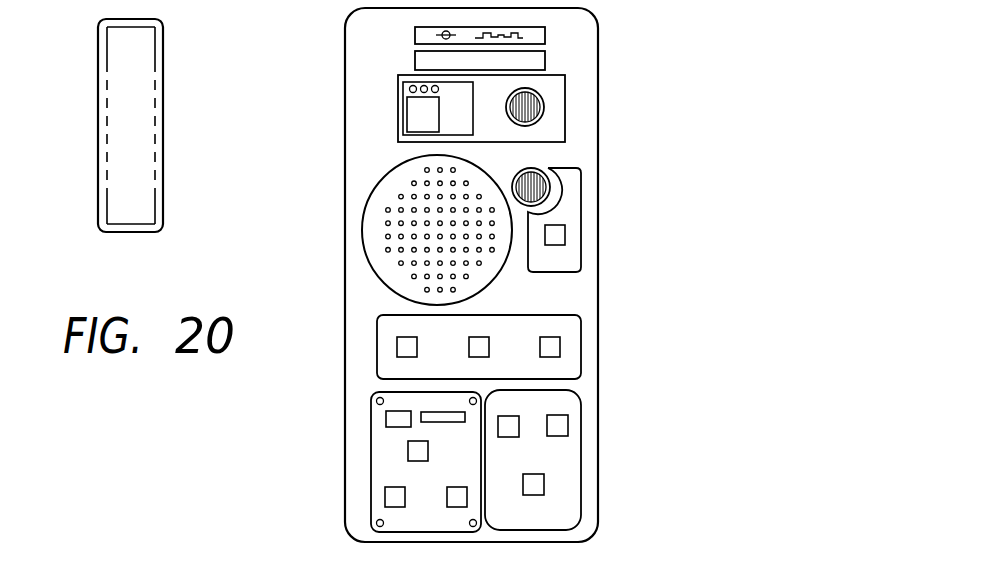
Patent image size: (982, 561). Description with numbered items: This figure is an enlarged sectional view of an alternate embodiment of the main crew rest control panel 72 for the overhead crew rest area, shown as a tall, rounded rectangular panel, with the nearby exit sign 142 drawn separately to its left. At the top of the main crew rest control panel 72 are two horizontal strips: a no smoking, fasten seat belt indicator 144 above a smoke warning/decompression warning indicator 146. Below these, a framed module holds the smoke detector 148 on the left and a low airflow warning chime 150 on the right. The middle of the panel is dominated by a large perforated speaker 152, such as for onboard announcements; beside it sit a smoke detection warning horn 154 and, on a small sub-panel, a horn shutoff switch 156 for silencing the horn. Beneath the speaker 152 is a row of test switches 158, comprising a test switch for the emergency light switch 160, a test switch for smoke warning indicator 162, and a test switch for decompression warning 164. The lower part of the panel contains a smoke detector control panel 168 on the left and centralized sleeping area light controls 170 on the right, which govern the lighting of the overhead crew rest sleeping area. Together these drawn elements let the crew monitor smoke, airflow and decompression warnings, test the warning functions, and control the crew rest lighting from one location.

The main crew rest control panel 72 is at (372, 47).
The exit sign 142 is at (100, 128).
The no smoking, fasten seat belt indicator 144 is at (545, 35).
The smoke warning/decompression warning indicator 146 is at (545, 60).
The smoke detector 148 is at (398, 108).
The low airflow warning chime 150 is at (545, 107).
The speaker 152 is at (362, 232).
The smoke detection warning horn 154 is at (552, 190).
The horn shutoff switch 156 is at (565, 235).
The test switches 158 is at (470, 330).
The test switch for the emergency light switch 160 is at (403, 337).
The test switch for smoke warning indicator 162 is at (477, 336).
The test switch for decompression warning 164 is at (561, 347).
The smoke detector control panel 168 is at (371, 463).
The centralized sleeping area light controls 170 is at (608, 385).